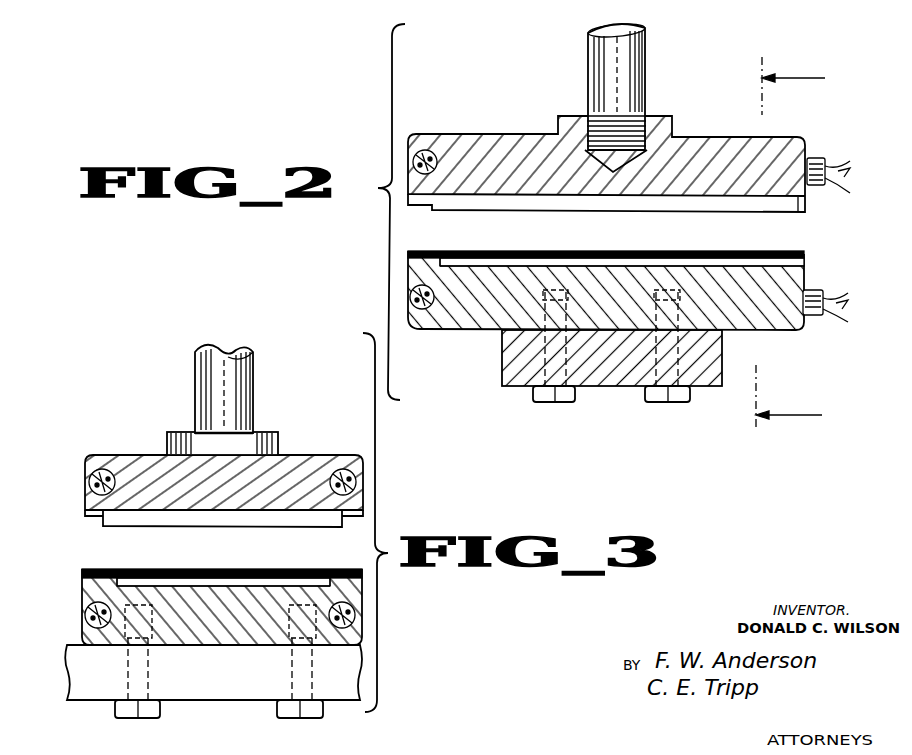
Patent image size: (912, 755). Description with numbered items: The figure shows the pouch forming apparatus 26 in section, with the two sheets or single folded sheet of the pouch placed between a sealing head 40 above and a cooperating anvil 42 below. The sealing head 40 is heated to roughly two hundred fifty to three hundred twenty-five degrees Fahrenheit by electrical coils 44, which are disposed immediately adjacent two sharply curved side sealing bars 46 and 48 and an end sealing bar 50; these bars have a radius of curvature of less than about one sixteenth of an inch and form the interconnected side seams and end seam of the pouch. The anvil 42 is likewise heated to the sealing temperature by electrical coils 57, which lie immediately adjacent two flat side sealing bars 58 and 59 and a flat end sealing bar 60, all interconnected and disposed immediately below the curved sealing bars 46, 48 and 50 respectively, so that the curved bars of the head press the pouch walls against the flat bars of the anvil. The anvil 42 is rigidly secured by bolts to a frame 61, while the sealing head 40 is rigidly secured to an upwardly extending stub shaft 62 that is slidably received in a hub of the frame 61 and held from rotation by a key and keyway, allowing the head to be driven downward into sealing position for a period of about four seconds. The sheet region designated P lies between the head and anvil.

In FIG. 2, the pouch forming apparatus 26 is at (530, 75).
In FIG. 3, the pouch forming apparatus 26 is at (276, 355).
In FIG. 2, the sealing head 40 is at (690, 137).
In FIG. 3, the sealing head 40 is at (292, 455).
In FIG. 2, the anvil 42 is at (806, 272).
In FIG. 3, the anvil 42 is at (245, 646).
In FIG. 2, the electrical coils 44 is at (426, 150).
In FIG. 3, the electrical coils 44 is at (104, 470).
In FIG. 3, the side sealing bar 46 is at (95, 517).
In FIG. 2, the side sealing bar 48 is at (806, 205).
In FIG. 3, the side sealing bar 48 is at (356, 517).
In FIG. 2, the end sealing bar 50 is at (429, 211).
In FIG. 3, the end sealing bar 50 is at (205, 527).
In FIG. 2, the electrical coils 57 is at (421, 311).
In FIG. 3, the electrical coils 57 is at (96, 628).
In FIG. 3, the flat side sealing bar 58 is at (95, 562).
In FIG. 2, the flat side sealing bar 59 is at (558, 258).
In FIG. 3, the flat side sealing bar 59 is at (348, 569).
In FIG. 2, the flat end sealing bar 60 is at (422, 258).
In FIG. 3, the flat end sealing bar 60 is at (225, 569).
In FIG. 2, the frame 61 is at (606, 387).
In FIG. 3, the frame 61 is at (226, 694).
In FIG. 2, the stub shaft 62 is at (647, 53).
In FIG. 3, the stub shaft 62 is at (197, 377).
In FIG. 2, the plate P is at (650, 254).
In FIG. 3, the plate P is at (265, 569).